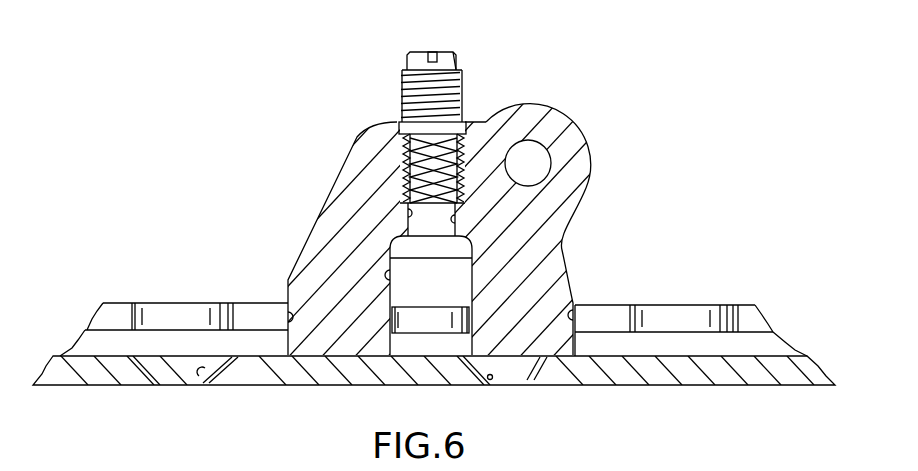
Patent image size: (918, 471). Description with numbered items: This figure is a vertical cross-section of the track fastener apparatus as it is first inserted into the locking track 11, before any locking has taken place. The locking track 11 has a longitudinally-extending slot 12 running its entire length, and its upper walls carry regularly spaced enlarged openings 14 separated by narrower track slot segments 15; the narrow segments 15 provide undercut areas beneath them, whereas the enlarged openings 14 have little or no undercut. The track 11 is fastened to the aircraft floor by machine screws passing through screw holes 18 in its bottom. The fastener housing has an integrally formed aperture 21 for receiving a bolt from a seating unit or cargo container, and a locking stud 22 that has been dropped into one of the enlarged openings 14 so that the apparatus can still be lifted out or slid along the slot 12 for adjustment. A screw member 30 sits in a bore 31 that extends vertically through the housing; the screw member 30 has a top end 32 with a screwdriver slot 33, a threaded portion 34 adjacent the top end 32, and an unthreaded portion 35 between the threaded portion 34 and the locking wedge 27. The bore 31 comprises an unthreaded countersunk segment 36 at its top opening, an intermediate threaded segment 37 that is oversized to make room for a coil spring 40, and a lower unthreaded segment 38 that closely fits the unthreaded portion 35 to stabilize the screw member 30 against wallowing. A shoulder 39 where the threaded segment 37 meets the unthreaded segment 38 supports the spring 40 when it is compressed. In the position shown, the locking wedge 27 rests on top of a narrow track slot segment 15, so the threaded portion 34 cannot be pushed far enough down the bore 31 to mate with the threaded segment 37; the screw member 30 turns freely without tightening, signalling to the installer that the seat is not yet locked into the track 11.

The locking track 11 is at (55, 389).
The longitudinally-extending slot 12 is at (83, 347).
The enlarged openings 14 is at (287, 306).
The narrow track slot segments 15 is at (112, 312).
The screw holes 18 is at (489, 380).
The aperture 21 is at (551, 160).
The locking stud 22 is at (283, 331).
The locking wedge 27 is at (460, 276).
The screw member 30 is at (405, 57).
The bore 31 is at (407, 214).
The top end 32 is at (456, 62).
The screwdriver slot 33 is at (433, 53).
The threaded portion 34 is at (457, 90).
The unthreaded portion 35 is at (410, 226).
The unthreaded countersunk segment 36 is at (400, 130).
The intermediate threaded segment 37 is at (405, 170).
The unthreaded segment 38 is at (458, 221).
The shoulder 39 is at (390, 278).
The coil spring 40 is at (495, 122).